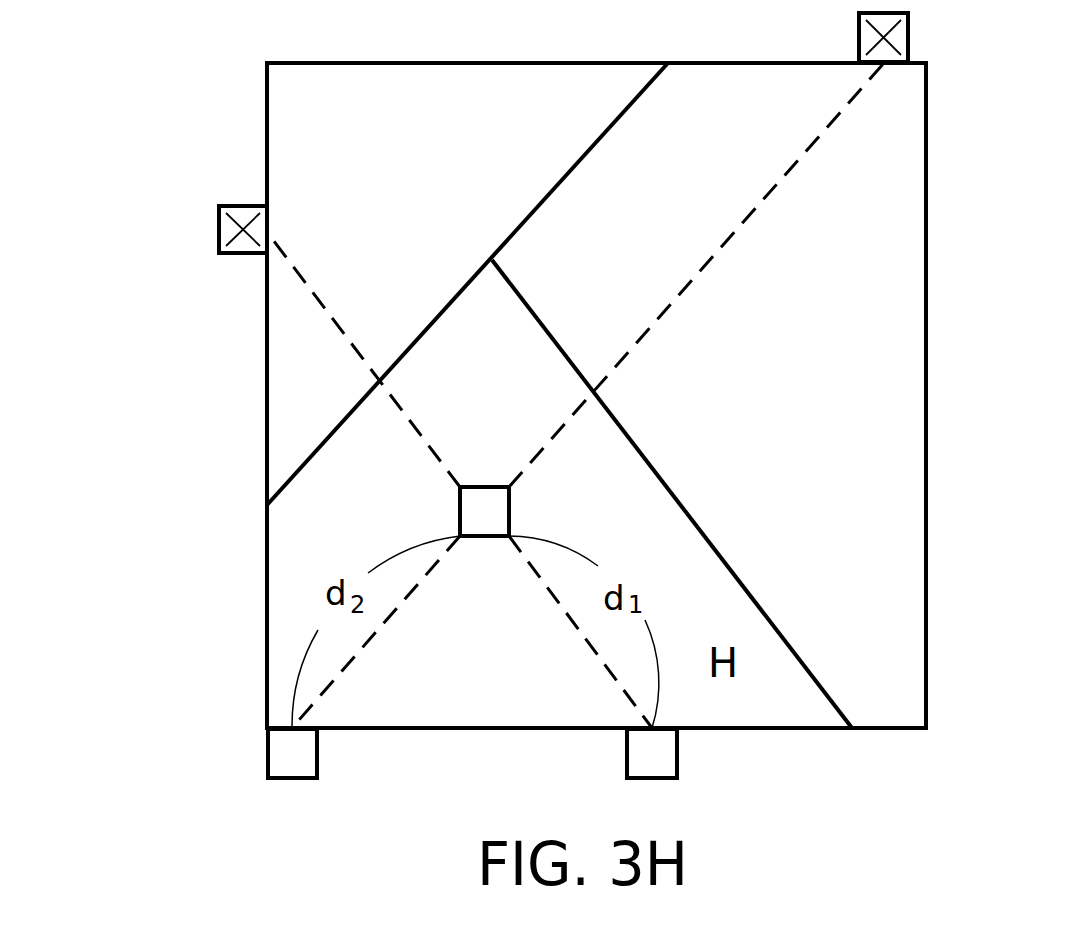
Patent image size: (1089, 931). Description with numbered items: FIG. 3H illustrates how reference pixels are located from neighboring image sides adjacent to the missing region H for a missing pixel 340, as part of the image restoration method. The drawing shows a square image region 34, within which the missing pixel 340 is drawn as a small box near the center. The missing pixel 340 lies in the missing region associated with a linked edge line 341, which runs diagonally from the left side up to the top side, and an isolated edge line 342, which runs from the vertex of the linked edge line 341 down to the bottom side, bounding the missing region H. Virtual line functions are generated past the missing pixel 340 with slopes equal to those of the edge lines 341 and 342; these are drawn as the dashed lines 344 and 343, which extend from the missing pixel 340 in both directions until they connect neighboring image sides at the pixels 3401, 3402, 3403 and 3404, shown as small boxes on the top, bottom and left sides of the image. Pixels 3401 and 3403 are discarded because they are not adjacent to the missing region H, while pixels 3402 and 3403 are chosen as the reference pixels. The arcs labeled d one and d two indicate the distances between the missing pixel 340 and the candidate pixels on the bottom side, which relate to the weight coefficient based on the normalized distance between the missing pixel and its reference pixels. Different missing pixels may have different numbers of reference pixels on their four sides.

The substrate / chip region 34 is at (926, 393).
The missing pixel 340 is at (509, 511).
The linked edge line 341 is at (577, 160).
The isolated edge line 342 is at (710, 540).
The dashed line 343 is at (712, 258).
The dashed line 344 is at (322, 303).
The pixel 3401 is at (908, 37).
The pixel 3402 is at (677, 752).
The pixel 3403 is at (268, 752).
The pixel 3404 is at (219, 228).